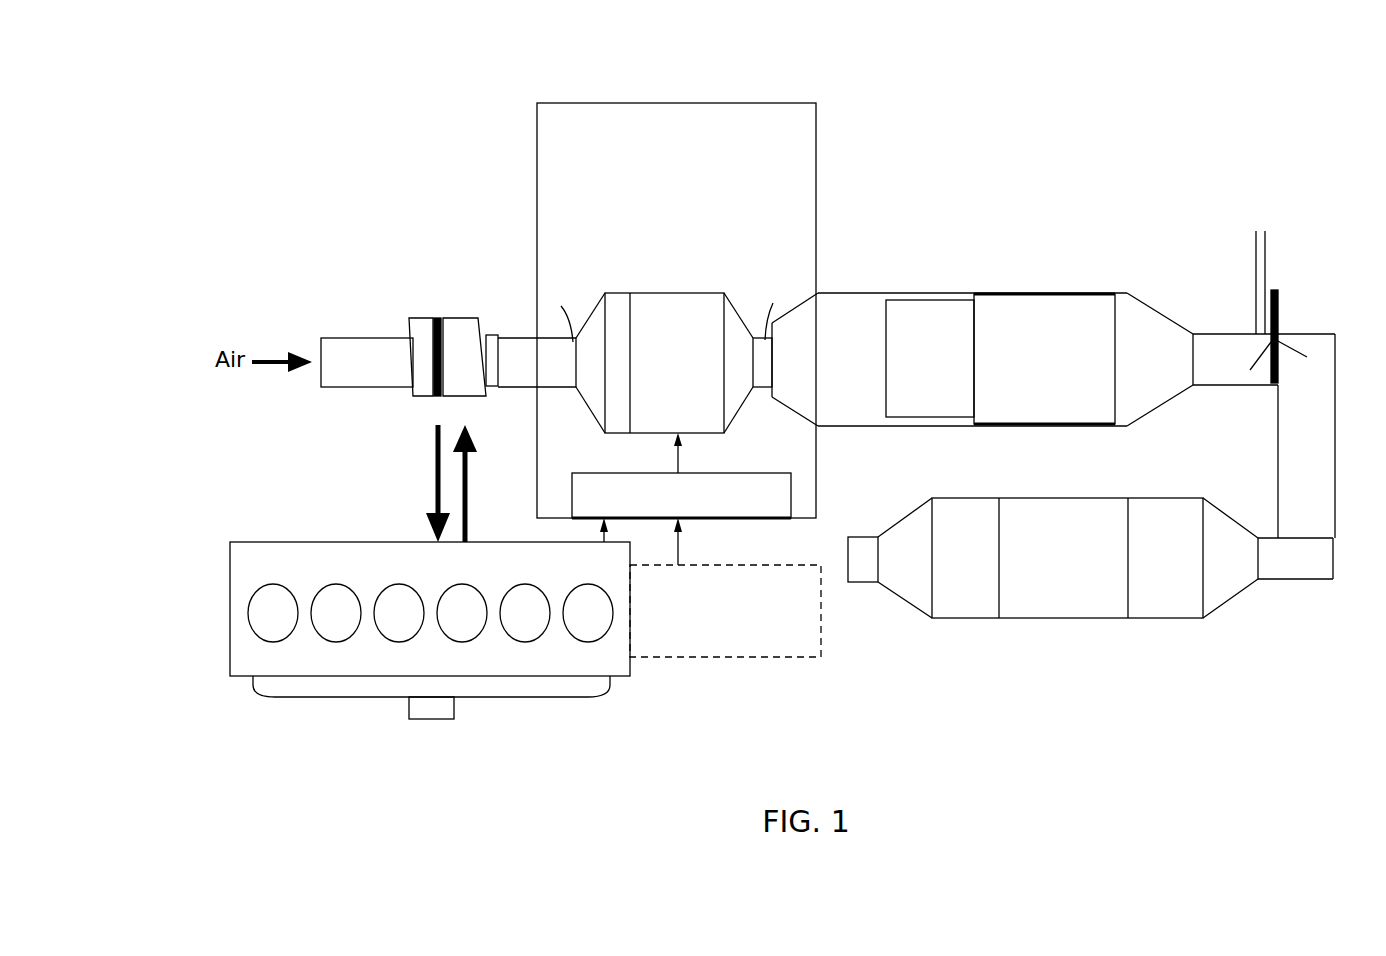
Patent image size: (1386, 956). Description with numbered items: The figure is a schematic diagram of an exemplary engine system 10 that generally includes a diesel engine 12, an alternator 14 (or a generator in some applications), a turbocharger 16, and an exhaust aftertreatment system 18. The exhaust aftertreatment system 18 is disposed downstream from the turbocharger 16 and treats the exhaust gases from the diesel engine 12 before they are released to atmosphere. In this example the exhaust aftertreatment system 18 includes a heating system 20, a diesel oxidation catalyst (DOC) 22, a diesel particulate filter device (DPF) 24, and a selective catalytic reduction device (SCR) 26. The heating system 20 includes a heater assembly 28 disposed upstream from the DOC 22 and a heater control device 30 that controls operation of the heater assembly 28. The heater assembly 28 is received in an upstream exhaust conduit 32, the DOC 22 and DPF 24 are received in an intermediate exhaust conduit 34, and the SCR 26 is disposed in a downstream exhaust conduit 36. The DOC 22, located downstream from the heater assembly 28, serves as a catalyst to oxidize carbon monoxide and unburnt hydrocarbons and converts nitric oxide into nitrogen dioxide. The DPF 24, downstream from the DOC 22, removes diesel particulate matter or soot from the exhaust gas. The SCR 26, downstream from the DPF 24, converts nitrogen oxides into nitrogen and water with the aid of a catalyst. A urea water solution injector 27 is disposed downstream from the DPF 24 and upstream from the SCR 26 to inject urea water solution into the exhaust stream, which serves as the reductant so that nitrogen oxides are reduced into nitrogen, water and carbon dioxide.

The engine system 10 is at (1181, 76).
The diesel engine 12 is at (230, 586).
The alternator 14 is at (770, 657).
The turbocharger 16 is at (421, 318).
The exhaust aftertreatment system 18 is at (1041, 150).
The heating system 20 is at (658, 310).
The diesel oxidation catalyst (DOC) 22 is at (908, 307).
The diesel particulate filter device (DPF) 24 is at (1045, 298).
The selective catalytic reduction device (SCR) 26 is at (1058, 620).
The urea water solution injector 27 is at (1267, 267).
The heater assembly 28 is at (722, 300).
The heater control device 30 is at (787, 502).
The upstream exhaust conduit 32 is at (597, 308).
The intermediate exhaust conduit 34 is at (832, 293).
The downstream exhaust conduit 36 is at (1158, 620).